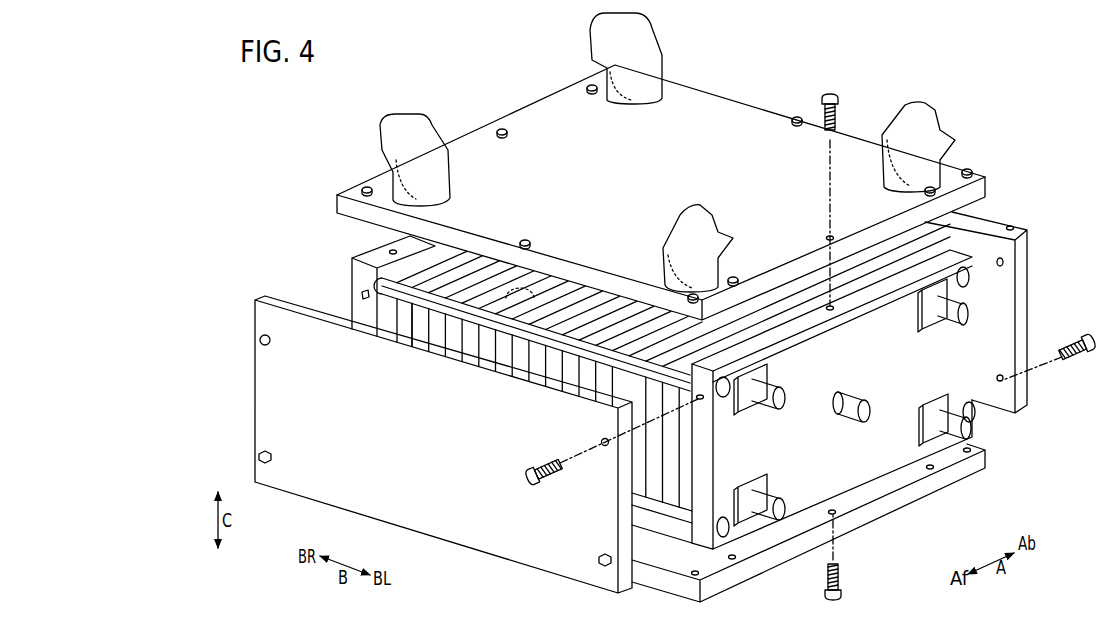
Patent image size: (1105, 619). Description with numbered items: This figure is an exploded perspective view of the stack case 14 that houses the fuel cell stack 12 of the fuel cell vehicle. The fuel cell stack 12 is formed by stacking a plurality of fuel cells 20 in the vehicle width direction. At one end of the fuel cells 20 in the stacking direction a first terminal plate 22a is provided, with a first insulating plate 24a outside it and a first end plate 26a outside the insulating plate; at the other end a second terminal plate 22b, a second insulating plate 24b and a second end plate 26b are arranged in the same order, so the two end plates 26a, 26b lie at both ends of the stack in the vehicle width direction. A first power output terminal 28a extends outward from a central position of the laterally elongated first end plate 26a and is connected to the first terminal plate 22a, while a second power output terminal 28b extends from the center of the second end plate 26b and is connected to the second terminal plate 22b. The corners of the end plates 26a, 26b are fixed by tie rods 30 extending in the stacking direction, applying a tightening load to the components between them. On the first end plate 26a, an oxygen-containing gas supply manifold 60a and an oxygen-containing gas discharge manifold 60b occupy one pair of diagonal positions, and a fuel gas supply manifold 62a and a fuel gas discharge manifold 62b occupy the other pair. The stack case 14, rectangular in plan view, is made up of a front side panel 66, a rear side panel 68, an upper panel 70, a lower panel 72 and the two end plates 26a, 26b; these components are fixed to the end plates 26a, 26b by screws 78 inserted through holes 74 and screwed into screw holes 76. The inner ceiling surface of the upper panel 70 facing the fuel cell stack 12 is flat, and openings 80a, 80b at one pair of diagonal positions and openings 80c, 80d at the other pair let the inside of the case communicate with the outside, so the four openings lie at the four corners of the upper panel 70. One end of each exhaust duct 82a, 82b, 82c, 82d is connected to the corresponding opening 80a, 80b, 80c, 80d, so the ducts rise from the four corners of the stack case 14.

The fuel cell stack 12 is at (660, 383).
The stack case 14 is at (524, 106).
The fuel cells 20 is at (497, 355).
The first terminal plate 22a is at (667, 458).
The second terminal plate 22b is at (422, 338).
The first insulating plate 24a is at (682, 475).
The second insulating plate 24b is at (403, 335).
The first end plate 26a is at (884, 459).
The second end plate 26b is at (351, 253).
The first power output terminal 28a is at (868, 422).
The second power output terminal 28b is at (507, 288).
The tie rods 30 is at (971, 282).
The oxygen-containing gas supply manifold 60a is at (945, 310).
The oxygen-containing gas discharge manifold 60b is at (770, 522).
The fuel gas supply manifold 62a is at (768, 398).
The fuel gas discharge manifold 62b is at (948, 426).
The front side panel 66 is at (309, 334).
The rear side panel 68 is at (1023, 268).
The upper panel 70 is at (737, 110).
The lower panel 72 is at (673, 590).
The holes 74 is at (829, 236).
The screw holes 76 is at (834, 310).
The screws 78 is at (830, 92).
The opening 80a is at (392, 176).
The opening 80b is at (883, 163).
The opening 80c is at (668, 262).
The opening 80d is at (604, 77).
The exhaust duct 82a is at (388, 138).
The exhaust duct 82b is at (906, 120).
The exhaust duct 82c is at (686, 220).
The exhaust duct 82d is at (600, 37).